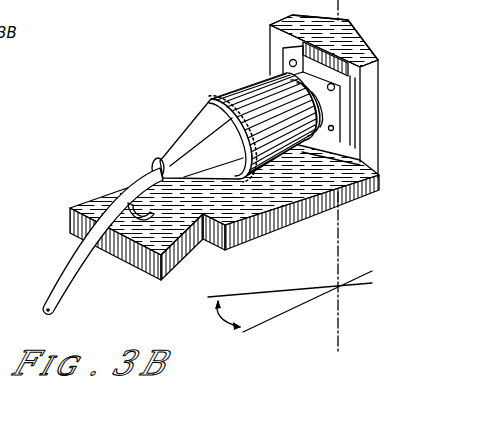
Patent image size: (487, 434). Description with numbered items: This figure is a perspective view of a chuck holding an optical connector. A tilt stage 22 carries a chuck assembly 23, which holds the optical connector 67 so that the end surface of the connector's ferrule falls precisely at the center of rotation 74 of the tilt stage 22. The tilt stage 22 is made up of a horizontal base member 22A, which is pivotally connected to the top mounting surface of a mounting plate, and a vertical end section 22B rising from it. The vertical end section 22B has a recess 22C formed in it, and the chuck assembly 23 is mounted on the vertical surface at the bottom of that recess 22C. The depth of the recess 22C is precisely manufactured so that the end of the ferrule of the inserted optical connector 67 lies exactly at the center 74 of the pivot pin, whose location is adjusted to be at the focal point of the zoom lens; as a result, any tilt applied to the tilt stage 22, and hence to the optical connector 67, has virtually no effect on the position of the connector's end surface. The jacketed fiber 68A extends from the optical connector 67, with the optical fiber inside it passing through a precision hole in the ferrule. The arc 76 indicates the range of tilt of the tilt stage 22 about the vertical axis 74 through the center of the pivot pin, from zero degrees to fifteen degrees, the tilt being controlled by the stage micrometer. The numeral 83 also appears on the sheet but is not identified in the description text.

The tilt stage 22 is at (251, 244).
The horizontal base member 22A is at (296, 208).
The vertical end section 22B is at (273, 43).
The recess 22C is at (282, 66).
The chuck assembly 23 is at (337, 106).
The optical connector 67 is at (211, 98).
The jacketed fiber 68A is at (78, 275).
The center of rotation 74 is at (363, 240).
The arc 76 is at (235, 315).
The partial label (adjacent figure) 83 is at (13, 62).